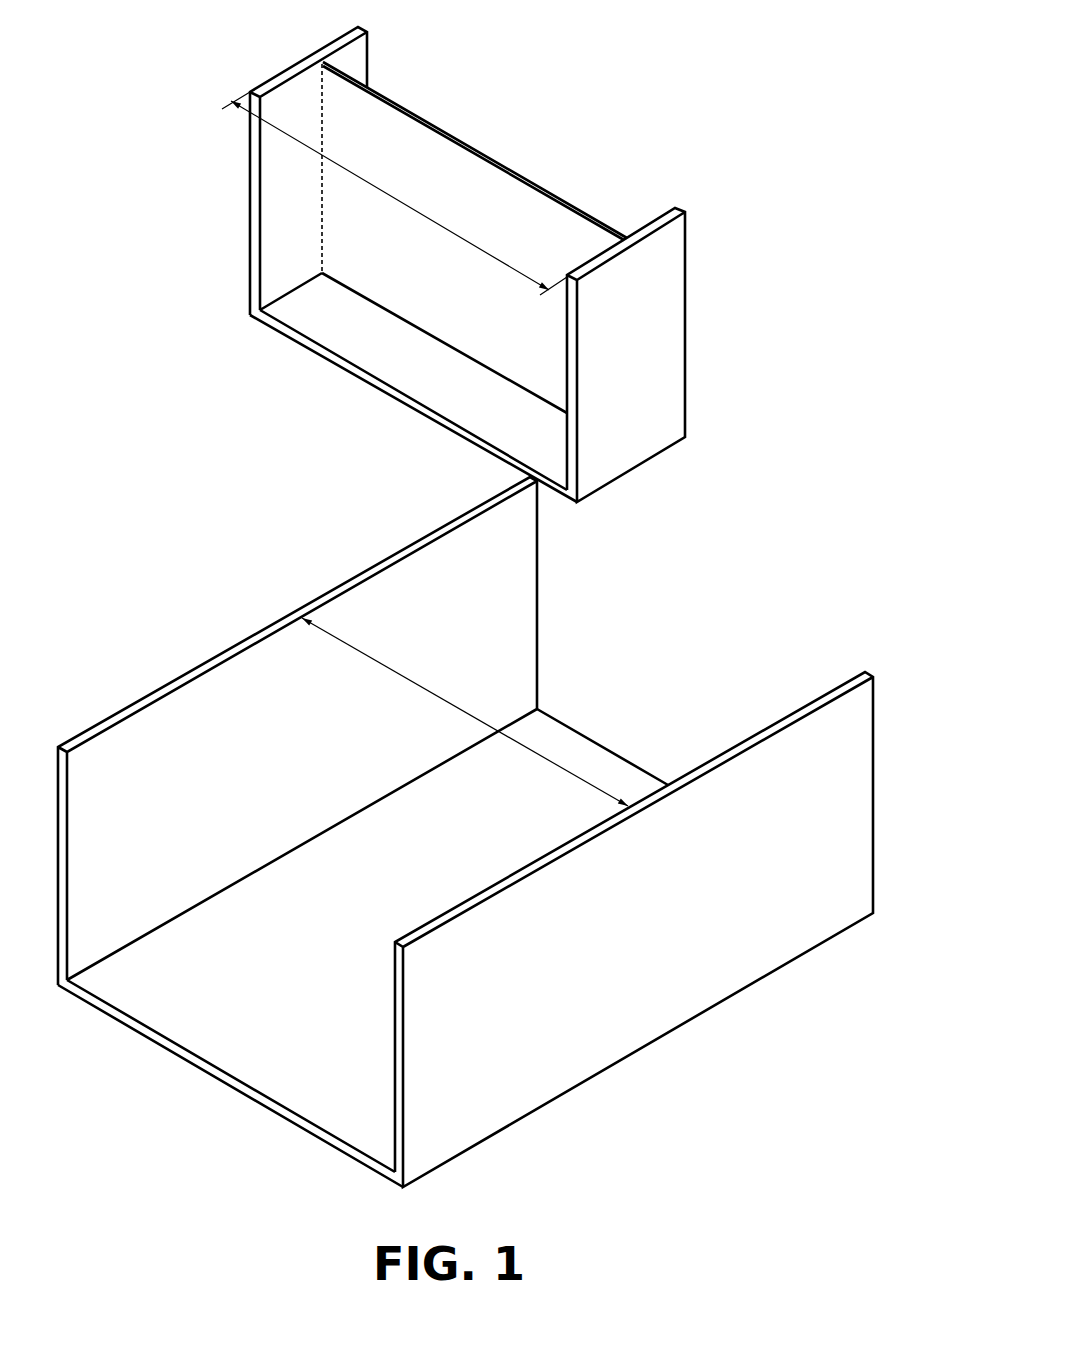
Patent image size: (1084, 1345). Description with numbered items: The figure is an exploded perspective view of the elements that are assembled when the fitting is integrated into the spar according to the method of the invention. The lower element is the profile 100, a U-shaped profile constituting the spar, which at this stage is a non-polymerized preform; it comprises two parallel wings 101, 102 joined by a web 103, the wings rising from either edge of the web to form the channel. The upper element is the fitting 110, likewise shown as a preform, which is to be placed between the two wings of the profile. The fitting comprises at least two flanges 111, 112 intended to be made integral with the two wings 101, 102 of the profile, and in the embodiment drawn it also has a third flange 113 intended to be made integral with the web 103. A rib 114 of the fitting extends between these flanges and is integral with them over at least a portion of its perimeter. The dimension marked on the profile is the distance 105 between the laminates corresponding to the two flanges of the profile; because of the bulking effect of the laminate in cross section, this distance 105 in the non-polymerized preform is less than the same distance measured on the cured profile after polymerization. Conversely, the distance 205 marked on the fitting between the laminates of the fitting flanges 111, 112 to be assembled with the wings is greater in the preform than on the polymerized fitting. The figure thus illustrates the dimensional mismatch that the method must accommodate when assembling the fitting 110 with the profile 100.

The profile 100 is at (181, 616).
The wing of the profile 101 is at (793, 844).
The wing of the profile 102 is at (337, 583).
The web of the profile 103 is at (270, 1012).
The distance between the flanges of the profile 105 is at (465, 712).
The fitting 110 is at (595, 104).
The flange of the fitting 111 is at (633, 344).
The flange of the fitting 112 is at (245, 188).
The third flange of the fitting 113 is at (407, 338).
The rib 114 is at (473, 143).
The inner width of second channel 205 is at (394, 193).